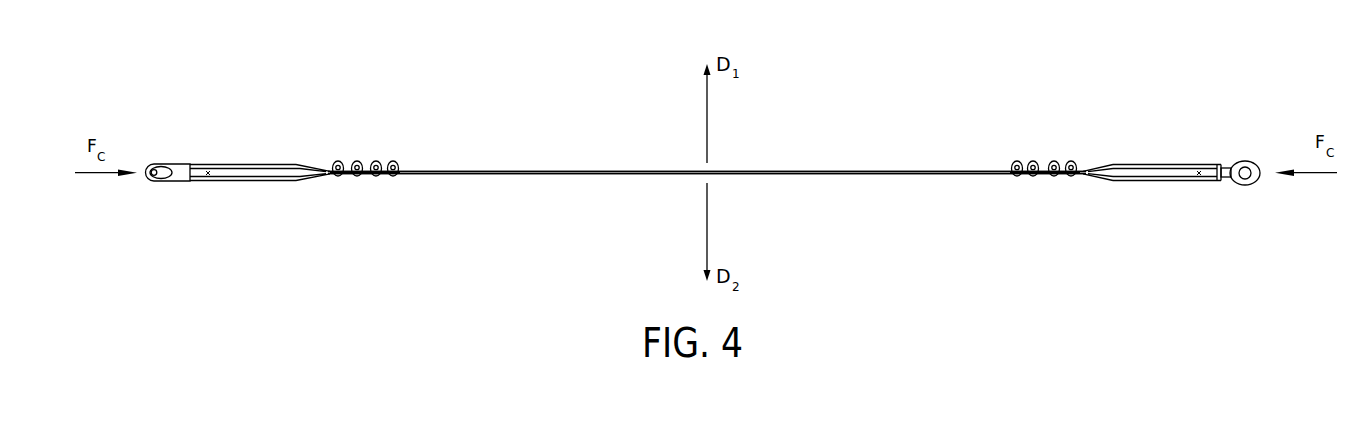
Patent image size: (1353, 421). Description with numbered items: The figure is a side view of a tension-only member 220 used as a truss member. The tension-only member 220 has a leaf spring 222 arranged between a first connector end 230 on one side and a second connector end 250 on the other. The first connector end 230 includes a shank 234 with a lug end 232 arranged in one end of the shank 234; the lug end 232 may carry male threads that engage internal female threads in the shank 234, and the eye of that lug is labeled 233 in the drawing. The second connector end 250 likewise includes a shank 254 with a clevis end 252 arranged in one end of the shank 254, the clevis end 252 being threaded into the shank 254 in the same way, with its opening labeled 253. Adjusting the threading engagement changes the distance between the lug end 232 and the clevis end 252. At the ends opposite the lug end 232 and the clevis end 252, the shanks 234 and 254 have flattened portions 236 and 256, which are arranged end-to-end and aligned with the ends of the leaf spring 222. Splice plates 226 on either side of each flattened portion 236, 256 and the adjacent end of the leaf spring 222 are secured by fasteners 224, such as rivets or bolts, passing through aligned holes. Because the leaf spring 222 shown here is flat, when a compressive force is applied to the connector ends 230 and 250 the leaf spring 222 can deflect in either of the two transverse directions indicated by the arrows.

The tension-only member 220 is at (781, 110).
The leaf spring 222 is at (573, 176).
The fasteners 224 is at (338, 161).
The splice plates 226 is at (375, 162).
The first connector end 230 is at (1174, 146).
The lug end 232 is at (1245, 161).
The eyelet of second anchor 233 is at (1246, 172).
The shank 234 is at (1172, 176).
The flattened portion 236 is at (1083, 177).
The second connector end 250 is at (247, 149).
The clevis end 252 is at (166, 172).
The eyelet opening of first anchor 253 is at (157, 164).
The shank 254 is at (255, 181).
The flattened portion 256 is at (330, 177).